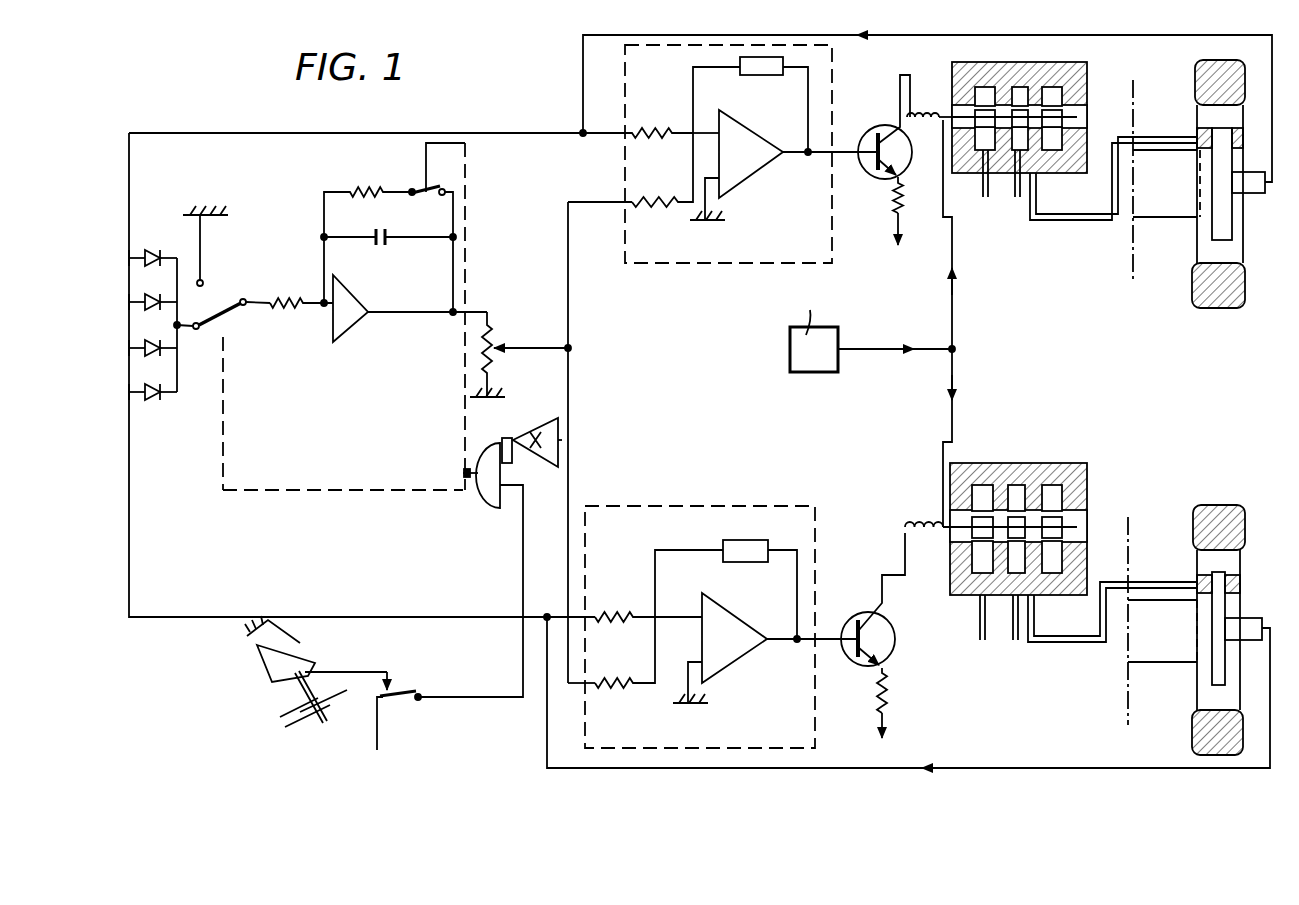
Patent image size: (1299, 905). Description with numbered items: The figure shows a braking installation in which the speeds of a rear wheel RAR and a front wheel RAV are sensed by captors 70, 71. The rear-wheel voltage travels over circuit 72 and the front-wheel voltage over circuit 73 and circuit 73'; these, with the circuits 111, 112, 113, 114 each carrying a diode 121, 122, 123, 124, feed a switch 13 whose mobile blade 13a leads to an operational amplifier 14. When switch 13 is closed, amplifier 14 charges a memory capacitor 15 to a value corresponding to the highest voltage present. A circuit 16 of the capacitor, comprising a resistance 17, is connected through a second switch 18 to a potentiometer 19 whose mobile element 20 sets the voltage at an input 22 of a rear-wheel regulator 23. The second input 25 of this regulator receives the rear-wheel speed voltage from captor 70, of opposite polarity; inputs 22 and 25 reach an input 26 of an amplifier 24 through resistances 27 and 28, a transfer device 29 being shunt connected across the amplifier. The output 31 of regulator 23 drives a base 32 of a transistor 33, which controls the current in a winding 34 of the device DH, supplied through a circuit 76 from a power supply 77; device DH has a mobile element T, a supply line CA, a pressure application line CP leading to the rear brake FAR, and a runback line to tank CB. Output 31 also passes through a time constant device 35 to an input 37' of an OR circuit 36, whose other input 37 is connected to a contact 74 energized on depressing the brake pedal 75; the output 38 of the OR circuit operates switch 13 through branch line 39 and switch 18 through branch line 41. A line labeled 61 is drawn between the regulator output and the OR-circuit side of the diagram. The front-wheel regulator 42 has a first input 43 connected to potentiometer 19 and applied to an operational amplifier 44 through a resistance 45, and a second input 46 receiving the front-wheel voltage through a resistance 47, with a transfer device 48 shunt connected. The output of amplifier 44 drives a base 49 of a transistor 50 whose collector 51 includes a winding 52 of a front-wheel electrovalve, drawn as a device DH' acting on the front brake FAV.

The circuit 111 is at (127, 246).
The circuit 112 is at (131, 318).
The circuit 113 is at (131, 363).
The circuit 114 is at (133, 398).
The diode 121 is at (158, 243).
The diode 122 is at (156, 290).
The diode 123 is at (156, 336).
The diode 124 is at (156, 380).
The switch 13 is at (216, 300).
The mobile blade 13a is at (230, 318).
The operational amplifier 14 is at (350, 330).
The memory capacitor 15 is at (386, 236).
The circuit 16 is at (453, 238).
The resistance 17 is at (377, 190).
The second switch 18 is at (411, 188).
The potentiometer 19 is at (494, 362).
The mobile element 20 is at (540, 348).
The input 22 is at (562, 682).
The regulator 23 is at (710, 515).
The amplifier 24 is at (737, 630).
The second input 25 is at (557, 618).
The input 26 is at (693, 615).
The resistance 27 is at (628, 678).
The resistance 28 is at (632, 612).
The transfer device 29 is at (762, 528).
The output 31 is at (840, 640).
The base 32 is at (846, 625).
The transistor 33 is at (900, 648).
The winding 34 is at (937, 532).
The time constant device 35 is at (537, 445).
The OR circuit 36 is at (483, 500).
The input 37 is at (485, 581).
The input 37' is at (487, 442).
The output 38 is at (465, 470).
The branch line 39 is at (298, 494).
The branch line 41 is at (468, 196).
The regulator 42 is at (640, 268).
The first input 43 is at (602, 193).
The operational amplifier 44 is at (752, 172).
The resistance 45 is at (668, 196).
The second input 46 is at (606, 133).
The resistance 47 is at (665, 128).
The transfer device 48 is at (752, 74).
The base 49 is at (866, 162).
The transistor 50 is at (870, 140).
The collector 51 is at (899, 80).
The winding 52 is at (905, 160).
The connecting line 61 is at (697, 440).
The captor 70 is at (1252, 628).
The captor 71 is at (1255, 193).
The circuit 72 is at (1015, 768).
The circuit 73 is at (926, 108).
The circuit 73' is at (356, 360).
The contact 74 is at (402, 702).
The brake pedal 75 is at (280, 692).
The circuit 76 is at (955, 370).
The electrical power supply 77 is at (825, 372).
The front wheel RAV is at (1192, 76).
The front brake FAV is at (1197, 132).
The rear wheel RAR is at (1190, 521).
The brake FAR is at (1196, 576).
The brake pressure control device DH is at (1015, 508).
The front hydraulic distributor DH' is at (1074, 154).
The mobile element T is at (1055, 522).
The runback line to a tank CB is at (980, 635).
The fluid supply line CA is at (1013, 635).
The pressure application line CP is at (1058, 648).